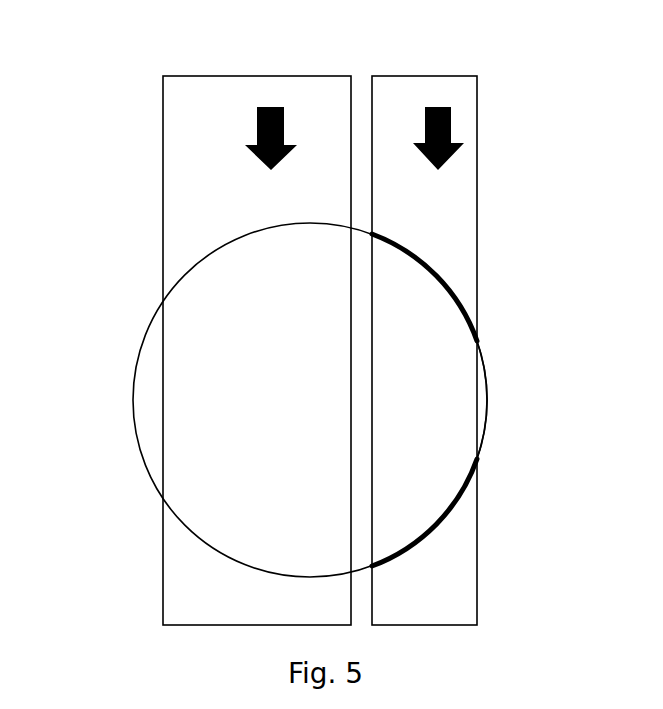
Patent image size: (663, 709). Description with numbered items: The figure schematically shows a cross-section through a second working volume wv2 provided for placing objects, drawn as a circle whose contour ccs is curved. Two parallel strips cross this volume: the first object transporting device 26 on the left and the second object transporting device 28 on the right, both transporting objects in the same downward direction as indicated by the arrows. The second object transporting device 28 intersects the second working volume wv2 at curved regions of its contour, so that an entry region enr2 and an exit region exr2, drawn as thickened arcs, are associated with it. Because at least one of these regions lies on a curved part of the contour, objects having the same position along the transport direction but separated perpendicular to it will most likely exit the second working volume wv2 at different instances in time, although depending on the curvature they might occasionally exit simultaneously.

The first object transporting device 26 is at (168, 107).
The second object transporting device 28 is at (473, 93).
The second working volume wv2 is at (132, 342).
The circular cross-section / wafer contour ccs is at (483, 423).
The entry region enr2 is at (417, 262).
The exit region exr2 is at (415, 545).